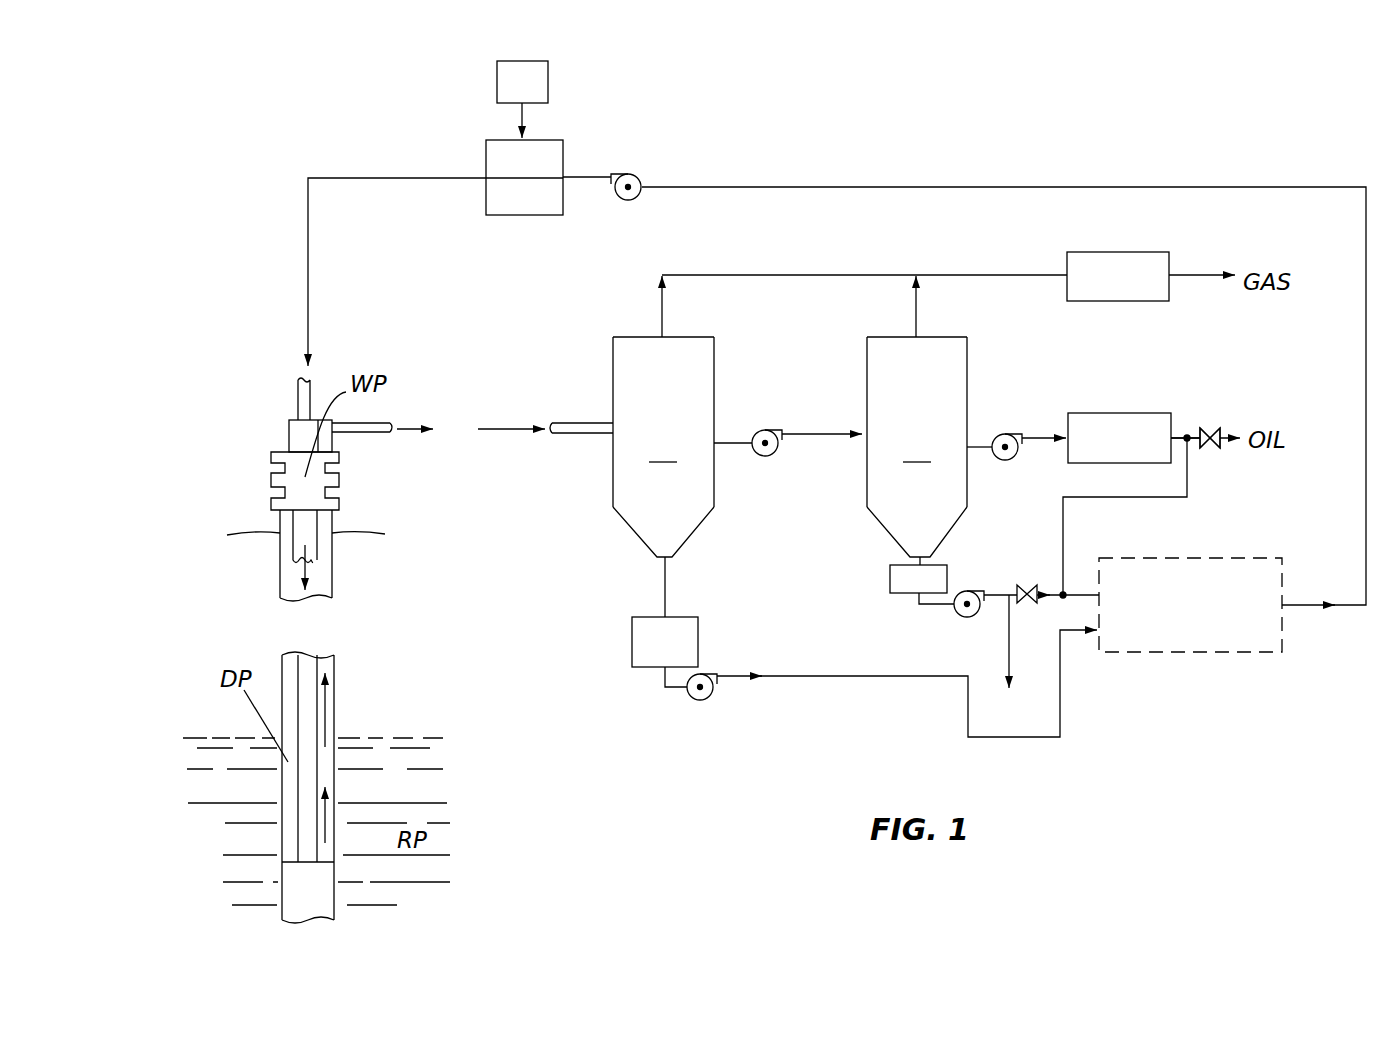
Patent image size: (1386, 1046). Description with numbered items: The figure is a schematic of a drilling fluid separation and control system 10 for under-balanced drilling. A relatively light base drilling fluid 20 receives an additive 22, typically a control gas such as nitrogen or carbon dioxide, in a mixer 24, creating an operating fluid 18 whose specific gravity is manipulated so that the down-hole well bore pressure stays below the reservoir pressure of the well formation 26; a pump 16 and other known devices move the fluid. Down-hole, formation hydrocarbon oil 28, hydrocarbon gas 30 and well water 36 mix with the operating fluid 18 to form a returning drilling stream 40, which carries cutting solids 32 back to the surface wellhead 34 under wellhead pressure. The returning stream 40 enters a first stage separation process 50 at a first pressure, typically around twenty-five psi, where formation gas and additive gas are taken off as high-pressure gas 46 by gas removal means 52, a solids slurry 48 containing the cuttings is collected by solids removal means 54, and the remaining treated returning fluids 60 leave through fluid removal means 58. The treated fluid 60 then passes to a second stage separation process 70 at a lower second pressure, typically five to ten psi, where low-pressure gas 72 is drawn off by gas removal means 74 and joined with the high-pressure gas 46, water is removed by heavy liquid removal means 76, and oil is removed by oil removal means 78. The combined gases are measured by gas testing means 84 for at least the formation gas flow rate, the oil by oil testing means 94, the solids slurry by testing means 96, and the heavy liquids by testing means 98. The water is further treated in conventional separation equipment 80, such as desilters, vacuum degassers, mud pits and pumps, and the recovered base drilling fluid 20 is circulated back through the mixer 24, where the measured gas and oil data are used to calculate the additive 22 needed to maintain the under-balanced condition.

The drilling fluid separation and control system 10 is at (963, 146).
The pump 16 is at (624, 180).
The operating fluid 18 is at (308, 295).
The base drilling fluid 20 is at (792, 186).
The additive 22 is at (534, 94).
The mixer 24 is at (537, 190).
The well formation 26 is at (433, 777).
The hydrocarbon oil 28 is at (220, 840).
The hydrocarbon gas 30 is at (208, 790).
The cutting solids 32 is at (332, 825).
The wellhead 34 is at (316, 480).
The well water 36 is at (427, 813).
The returning drilling stream 40 is at (412, 429).
The high-pressure gas 46 is at (662, 322).
The solids slurry 48 is at (864, 647).
The first stage separation process 50 is at (644, 453).
The gas removal means 52 is at (633, 350).
The solids removal means 54 is at (651, 531).
The fluid removal means 58 is at (692, 468).
The treated returning fluids 60 is at (729, 443).
The second stage separation process 70 is at (930, 447).
The low-pressure gas 72 is at (916, 320).
The gas removal means 74 is at (882, 355).
The heavy liquid removal means 76 is at (925, 533).
The oil removal means 78 is at (952, 418).
The conventional separation equipment and techniques 80 is at (1245, 652).
The gas testing means 84 is at (1105, 289).
The oil testing means 94 is at (1106, 450).
The testing means 96 is at (651, 654).
The testing means 98 is at (890, 578).